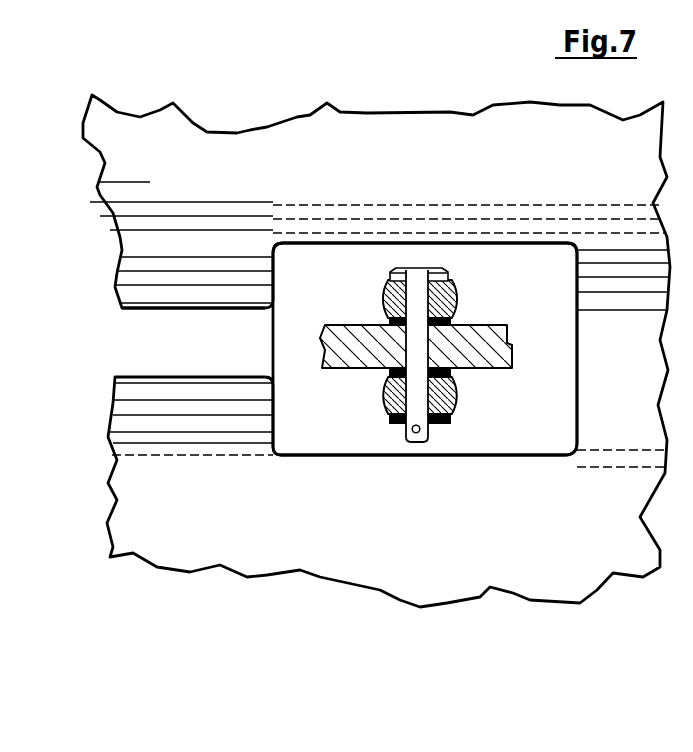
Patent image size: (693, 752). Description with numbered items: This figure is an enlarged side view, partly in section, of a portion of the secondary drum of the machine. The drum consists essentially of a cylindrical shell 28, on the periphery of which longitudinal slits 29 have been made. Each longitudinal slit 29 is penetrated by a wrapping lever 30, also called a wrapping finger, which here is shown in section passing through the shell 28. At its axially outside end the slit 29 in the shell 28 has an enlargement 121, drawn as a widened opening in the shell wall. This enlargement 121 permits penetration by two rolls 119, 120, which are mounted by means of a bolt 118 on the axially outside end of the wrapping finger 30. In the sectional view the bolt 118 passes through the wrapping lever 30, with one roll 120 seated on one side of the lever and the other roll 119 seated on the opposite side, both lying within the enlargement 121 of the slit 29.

The cylindrical shell 28 is at (502, 165).
The longitudinal slit 29 is at (219, 308).
The enlargement 121 is at (297, 252).
The wrapping lever 30 is at (352, 345).
The roll 120 is at (392, 272).
The roll 119 is at (448, 415).
The bolt 118 is at (421, 305).